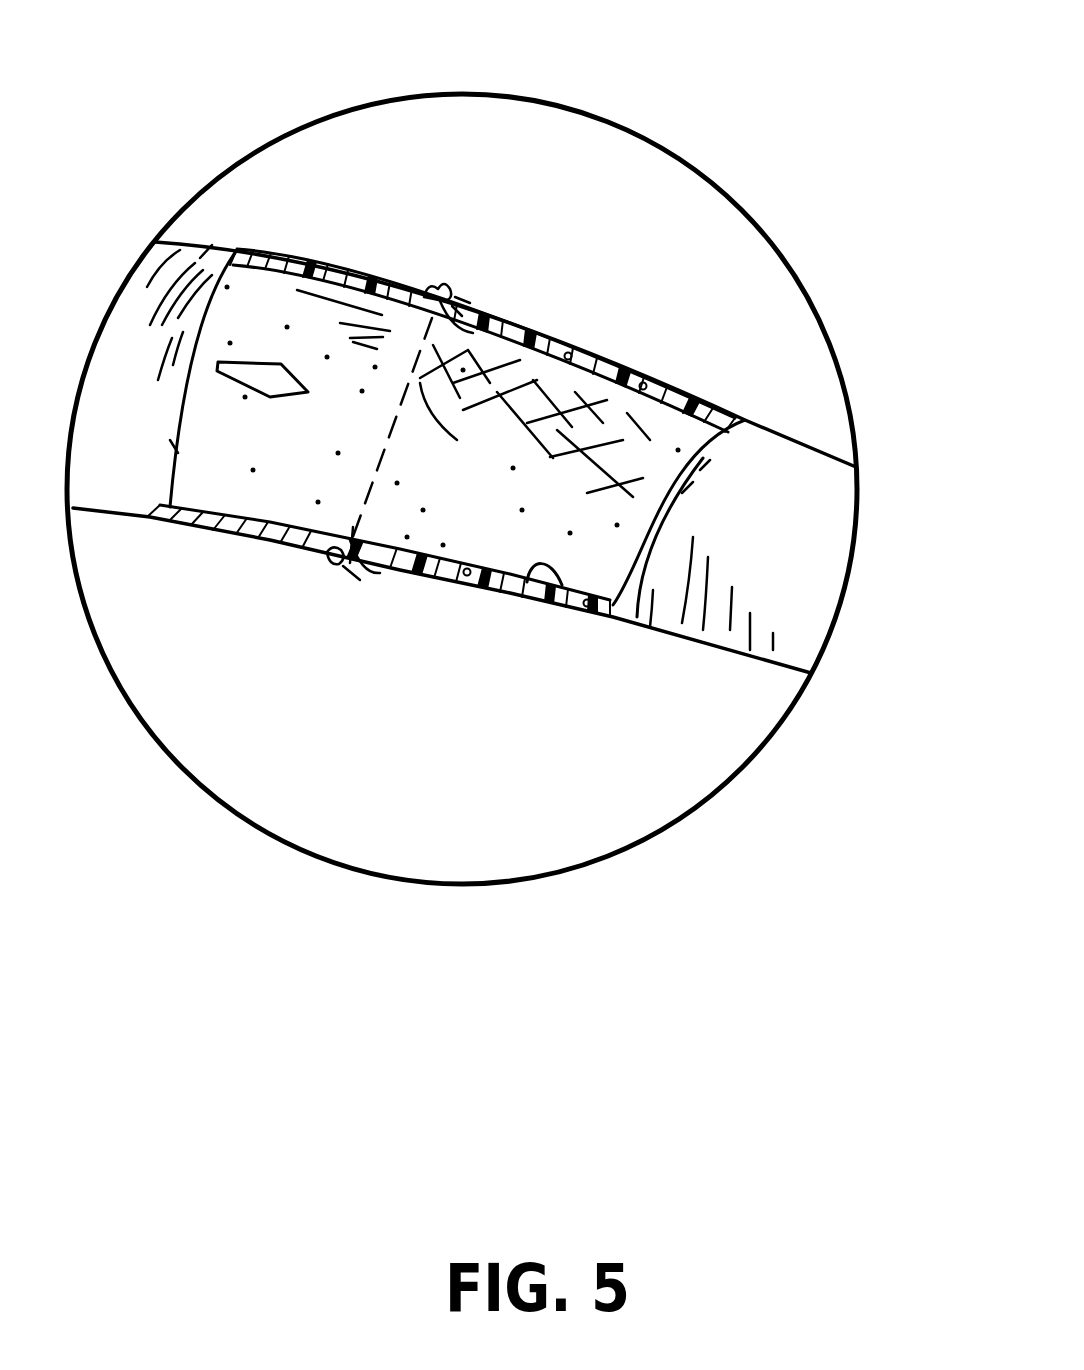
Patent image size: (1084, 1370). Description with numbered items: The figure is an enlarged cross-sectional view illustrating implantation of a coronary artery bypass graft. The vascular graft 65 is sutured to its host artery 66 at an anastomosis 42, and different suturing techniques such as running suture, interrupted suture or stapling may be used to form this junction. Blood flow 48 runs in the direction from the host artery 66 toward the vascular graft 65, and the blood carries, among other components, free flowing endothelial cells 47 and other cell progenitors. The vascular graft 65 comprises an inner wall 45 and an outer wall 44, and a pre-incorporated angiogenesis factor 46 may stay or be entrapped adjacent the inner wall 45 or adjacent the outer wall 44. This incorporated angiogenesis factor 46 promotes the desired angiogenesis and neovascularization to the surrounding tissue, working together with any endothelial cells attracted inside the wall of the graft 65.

The host artery 66 is at (303, 247).
The anastomosis 42 is at (443, 273).
The vascular graft 65 is at (646, 372).
The outer wall 44 is at (693, 392).
The blood flow 48 is at (233, 385).
The free flowing endothelial cells 47 is at (324, 467).
The angiogenesis factor 46 is at (433, 572).
The inner wall 45 is at (562, 585).